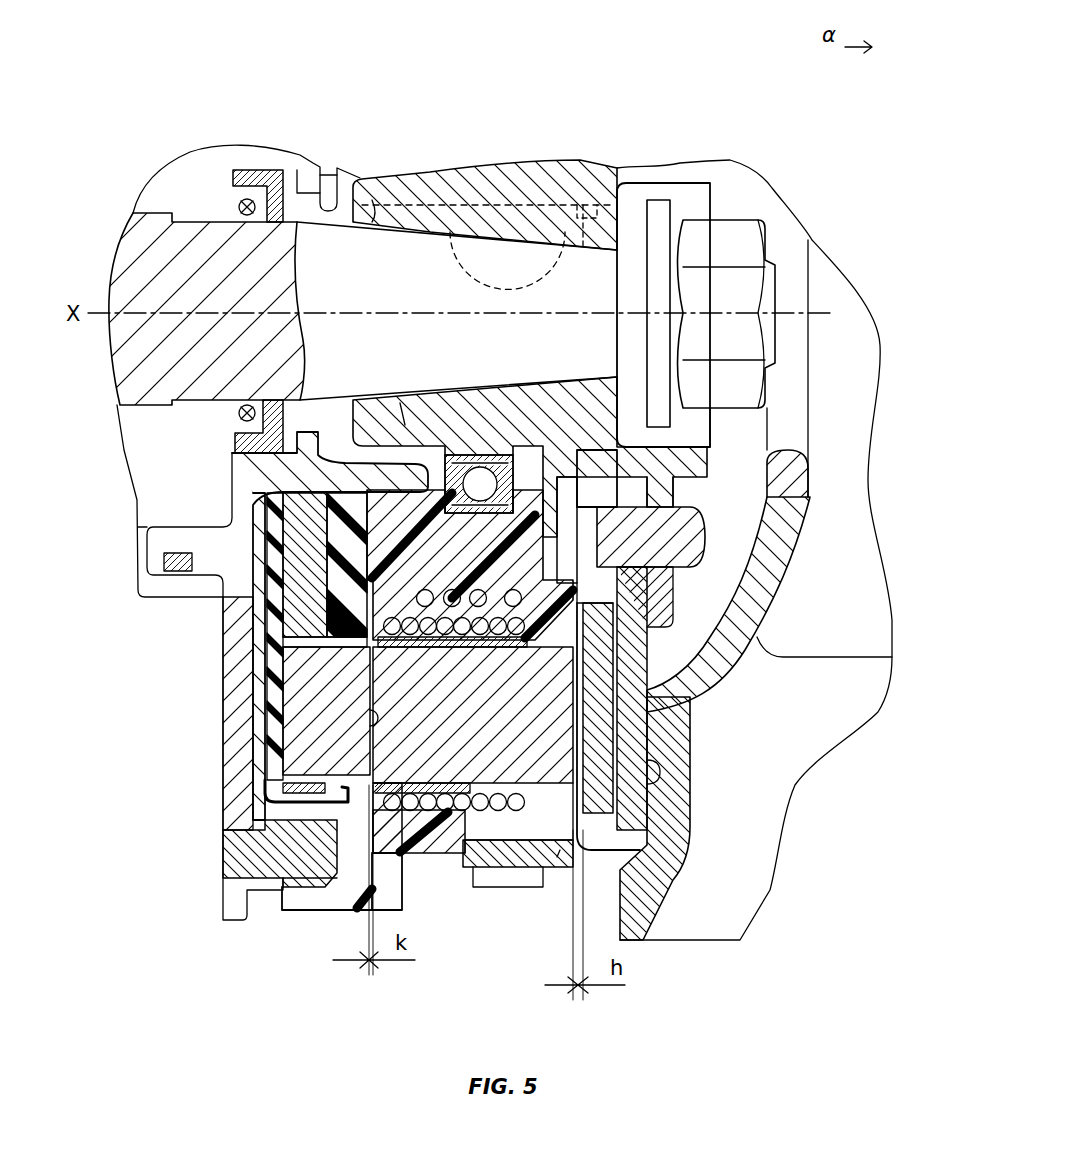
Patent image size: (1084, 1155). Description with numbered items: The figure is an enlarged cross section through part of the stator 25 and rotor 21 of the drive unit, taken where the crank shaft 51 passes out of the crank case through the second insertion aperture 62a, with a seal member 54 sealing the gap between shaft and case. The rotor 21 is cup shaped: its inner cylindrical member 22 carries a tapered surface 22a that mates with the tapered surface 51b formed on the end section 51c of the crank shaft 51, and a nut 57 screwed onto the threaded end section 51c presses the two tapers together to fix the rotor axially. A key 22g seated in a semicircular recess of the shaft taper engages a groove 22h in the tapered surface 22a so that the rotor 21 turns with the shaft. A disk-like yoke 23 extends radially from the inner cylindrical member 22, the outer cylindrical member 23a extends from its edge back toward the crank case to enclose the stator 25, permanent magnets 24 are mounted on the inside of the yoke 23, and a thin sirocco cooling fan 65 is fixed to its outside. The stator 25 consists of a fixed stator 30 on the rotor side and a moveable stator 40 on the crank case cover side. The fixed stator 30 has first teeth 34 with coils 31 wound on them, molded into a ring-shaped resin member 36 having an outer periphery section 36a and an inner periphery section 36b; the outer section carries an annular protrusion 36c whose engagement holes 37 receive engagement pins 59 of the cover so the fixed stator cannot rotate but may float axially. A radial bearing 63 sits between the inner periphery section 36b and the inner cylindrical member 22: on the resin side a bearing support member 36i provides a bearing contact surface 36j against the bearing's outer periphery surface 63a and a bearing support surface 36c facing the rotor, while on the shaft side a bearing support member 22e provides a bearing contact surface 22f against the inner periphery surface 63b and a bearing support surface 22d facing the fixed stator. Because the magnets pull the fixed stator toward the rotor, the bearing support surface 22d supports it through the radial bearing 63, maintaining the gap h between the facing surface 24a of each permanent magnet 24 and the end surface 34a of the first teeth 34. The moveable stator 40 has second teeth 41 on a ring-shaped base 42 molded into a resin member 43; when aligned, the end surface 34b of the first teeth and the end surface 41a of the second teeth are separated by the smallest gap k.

The rotor 21 is at (707, 583).
The inner cylindrical member 22 is at (596, 385).
The tapered surface 22a is at (374, 200).
The bearing support surface 22d is at (517, 447).
The bearing support member 22e is at (562, 347).
The bearing contact surface 22f is at (470, 447).
The key 22g is at (513, 240).
The groove 22h is at (598, 208).
The yoke 23 is at (633, 810).
The outer cylindrical member 23a is at (557, 857).
The permanent magnet 24 is at (643, 867).
The facing surface 24a is at (620, 760).
The stator 25 is at (187, 437).
The fixed stator 30 is at (306, 476).
The coil 31 is at (395, 815).
The first tooth 34 is at (537, 867).
The end surface 34a is at (580, 720).
The end surface 34b is at (362, 762).
The resin member 36 is at (527, 975).
The outer periphery section 36a is at (488, 827).
The inner periphery section 36b is at (450, 807).
The bearing support surface 36c is at (353, 412).
The bearing support member 36i is at (412, 357).
The bearing contact surface 36j is at (400, 405).
The engagement hole 37 is at (283, 880).
The moveable stator 40 is at (402, 479).
The second tooth 41 is at (310, 687).
The end surface 41a is at (363, 713).
The base 42 is at (300, 613).
The resin member 43 is at (337, 557).
The crank shaft 51 is at (152, 275).
The tapered surface 51b is at (432, 182).
The end section 51c is at (597, 257).
The seal member 54 is at (222, 176).
The nut 57 is at (737, 228).
The engagement pin 59 is at (263, 855).
The second insertion aperture 62a is at (327, 185).
The radial bearing 63 is at (557, 507).
The outer periphery surface 63a is at (557, 533).
The inner periphery surface 63b is at (483, 466).
The cooling fan 65 is at (713, 673).